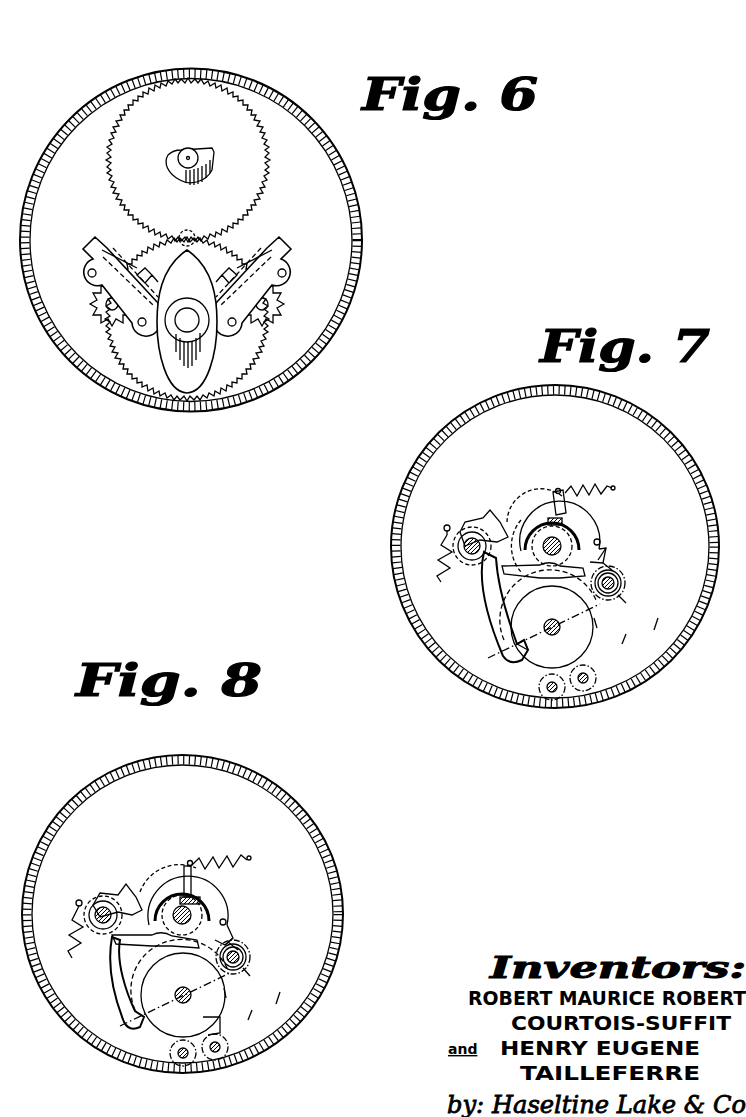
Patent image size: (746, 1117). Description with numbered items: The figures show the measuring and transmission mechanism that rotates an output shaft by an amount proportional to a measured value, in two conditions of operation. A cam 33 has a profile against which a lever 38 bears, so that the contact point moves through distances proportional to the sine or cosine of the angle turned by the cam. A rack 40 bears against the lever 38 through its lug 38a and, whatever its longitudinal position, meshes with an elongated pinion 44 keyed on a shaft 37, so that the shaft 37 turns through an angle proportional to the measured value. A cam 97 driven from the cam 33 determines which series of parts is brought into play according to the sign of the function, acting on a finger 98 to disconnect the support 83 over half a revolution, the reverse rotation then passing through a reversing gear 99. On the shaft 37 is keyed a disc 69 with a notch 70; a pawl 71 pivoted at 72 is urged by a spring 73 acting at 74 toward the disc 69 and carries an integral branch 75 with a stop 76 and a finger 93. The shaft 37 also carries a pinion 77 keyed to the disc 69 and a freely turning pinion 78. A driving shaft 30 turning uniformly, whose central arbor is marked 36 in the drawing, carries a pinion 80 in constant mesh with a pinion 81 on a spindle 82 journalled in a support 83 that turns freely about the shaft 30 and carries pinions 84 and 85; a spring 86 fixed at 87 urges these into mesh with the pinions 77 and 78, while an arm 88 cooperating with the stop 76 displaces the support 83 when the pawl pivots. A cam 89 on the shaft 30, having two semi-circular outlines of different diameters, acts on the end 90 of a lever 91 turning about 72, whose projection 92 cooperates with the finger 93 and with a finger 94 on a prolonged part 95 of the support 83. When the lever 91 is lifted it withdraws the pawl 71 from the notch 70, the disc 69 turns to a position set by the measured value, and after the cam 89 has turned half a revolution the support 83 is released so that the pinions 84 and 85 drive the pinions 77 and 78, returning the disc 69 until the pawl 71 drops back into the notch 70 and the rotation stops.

In FIG. 6, the driving shaft 30 is at (194, 233).
In FIG. 6, the cam 33 is at (162, 362).
In FIG. 6, the lever 38 is at (154, 266).
In FIG. 6, the lug 38a is at (136, 265).
In FIG. 6, the rack 40 is at (84, 243).
In FIG. 6, the pinion 44 is at (92, 302).
In FIG. 6, the pivot 72 is at (190, 152).
In FIG. 7, the pivot 72 is at (466, 557).
In FIG. 8, the pivot 72 is at (90, 922).
In FIG. 6, the cam 97 is at (215, 163).
In FIG. 7, the cam 97 is at (478, 519).
In FIG. 8, the cam 97 is at (110, 892).
In FIG. 7, the arbor 36 is at (556, 546).
In FIG. 8, the arbor 36 is at (182, 915).
In FIG. 7, the shaft 37 is at (544, 627).
In FIG. 8, the shaft 37 is at (175, 995).
In FIG. 7, the disc 69 is at (580, 643).
In FIG. 8, the disc 69 is at (212, 988).
In FIG. 7, the notch 70 is at (522, 661).
In FIG. 8, the notch 70 is at (214, 1029).
In FIG. 7, the pawl 71 is at (492, 629).
In FIG. 8, the pawl 71 is at (118, 1003).
In FIG. 7, the spring 73 is at (440, 552).
In FIG. 8, the spring 73 is at (72, 920).
In FIG. 7, the point of action of spring 74 is at (447, 525).
In FIG. 8, the point of action of spring 74 is at (76, 902).
In FIG. 7, the branch 75 is at (567, 512).
In FIG. 8, the branch 75 is at (200, 898).
In FIG. 7, the stop 76 is at (607, 550).
In FIG. 8, the stop 76 is at (234, 930).
In FIG. 7, the pinion 77 is at (598, 623).
In FIG. 8, the pinion 77 is at (226, 996).
In FIG. 7, the pinion 78 is at (635, 640).
In FIG. 8, the pinion 78 is at (257, 1017).
In FIG. 7, the pinion 80 is at (592, 521).
In FIG. 8, the pinion 80 is at (222, 895).
In FIG. 7, the pinion 81 is at (624, 581).
In FIG. 8, the pinion 81 is at (250, 957).
In FIG. 7, the spindle 82 is at (623, 590).
In FIG. 8, the spindle 82 is at (248, 962).
In FIG. 7, the support 83 is at (611, 567).
In FIG. 8, the support 83 is at (238, 945).
In FIG. 7, the pinion 84 is at (622, 598).
In FIG. 8, the pinion 84 is at (246, 970).
In FIG. 7, the pinion 85 is at (666, 627).
In FIG. 8, the pinion 85 is at (286, 1001).
In FIG. 7, the spring 86 is at (614, 486).
In FIG. 8, the spring 86 is at (249, 856).
In FIG. 7, the fixing point of spring 87 is at (559, 488).
In FIG. 8, the fixing point of spring 87 is at (192, 861).
In FIG. 7, the arm 88 is at (602, 540).
In FIG. 8, the arm 88 is at (228, 920).
In FIG. 7, the cam 89 is at (588, 574).
In FIG. 8, the cam 89 is at (182, 948).
In FIG. 7, the end of lever 90 is at (563, 591).
In FIG. 8, the end of lever 90 is at (152, 958).
In FIG. 7, the lever 91 is at (494, 521).
In FIG. 8, the lever 91 is at (128, 893).
In FIG. 7, the projection 92 is at (508, 578).
In FIG. 8, the projection 92 is at (138, 944).
In FIG. 7, the finger 93 is at (515, 520).
In FIG. 8, the finger 93 is at (150, 888).
In FIG. 7, the finger 94 is at (520, 578).
In FIG. 8, the finger 94 is at (184, 893).
In FIG. 7, the prolonged part of support 95 is at (488, 618).
In FIG. 8, the prolonged part of support 95 is at (114, 987).
In FIG. 7, the finger 98 is at (481, 568).
In FIG. 8, the finger 98 is at (113, 942).
In FIG. 7, the reversing gear 99 is at (598, 674).
In FIG. 8, the reversing gear 99 is at (228, 1052).